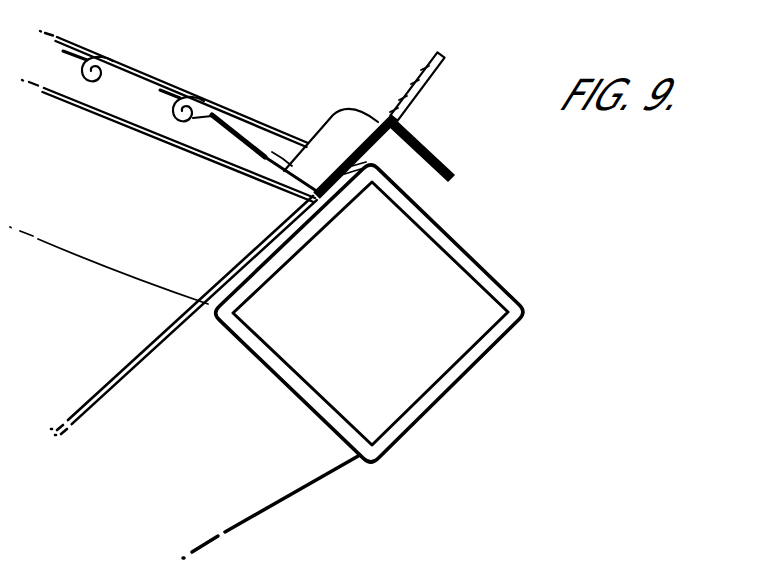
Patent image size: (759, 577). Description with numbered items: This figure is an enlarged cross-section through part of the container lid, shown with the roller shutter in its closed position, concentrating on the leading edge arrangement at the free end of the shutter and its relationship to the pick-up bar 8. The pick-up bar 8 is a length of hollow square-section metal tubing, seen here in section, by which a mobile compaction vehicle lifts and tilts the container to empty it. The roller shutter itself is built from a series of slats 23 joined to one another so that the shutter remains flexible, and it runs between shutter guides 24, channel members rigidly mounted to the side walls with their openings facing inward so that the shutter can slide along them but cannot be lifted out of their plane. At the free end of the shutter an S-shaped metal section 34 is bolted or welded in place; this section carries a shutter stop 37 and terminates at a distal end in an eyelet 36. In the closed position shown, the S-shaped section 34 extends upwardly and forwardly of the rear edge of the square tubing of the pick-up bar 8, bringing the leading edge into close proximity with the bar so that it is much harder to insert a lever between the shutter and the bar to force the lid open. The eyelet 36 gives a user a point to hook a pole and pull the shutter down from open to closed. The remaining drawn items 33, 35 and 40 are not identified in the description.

The pick-up bar 8 is at (369, 313).
The slats 23 is at (208, 74).
The shutter guides 24 is at (174, 80).
The bracket 33 is at (265, 115).
The S-shaped metal section 34 is at (299, 119).
The arm 35 is at (445, 149).
The eyelet 36 is at (409, 125).
The shutter stop 37 is at (337, 112).
The member 40 is at (651, 564).